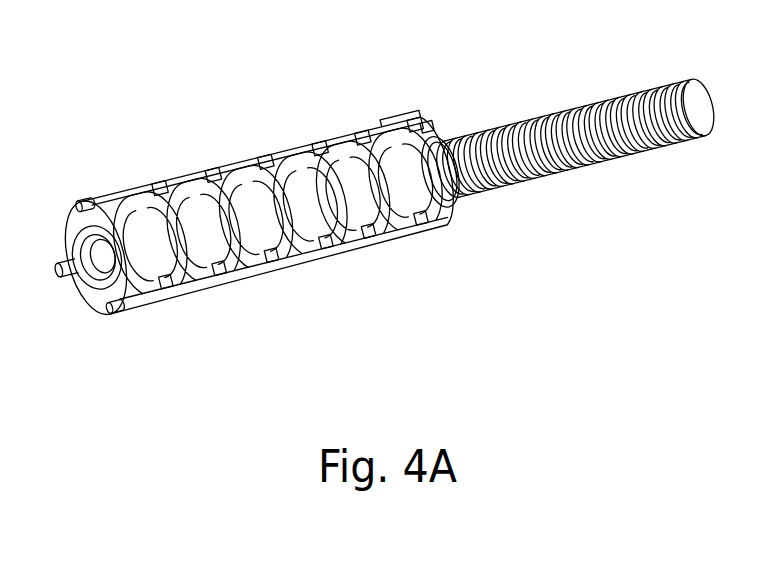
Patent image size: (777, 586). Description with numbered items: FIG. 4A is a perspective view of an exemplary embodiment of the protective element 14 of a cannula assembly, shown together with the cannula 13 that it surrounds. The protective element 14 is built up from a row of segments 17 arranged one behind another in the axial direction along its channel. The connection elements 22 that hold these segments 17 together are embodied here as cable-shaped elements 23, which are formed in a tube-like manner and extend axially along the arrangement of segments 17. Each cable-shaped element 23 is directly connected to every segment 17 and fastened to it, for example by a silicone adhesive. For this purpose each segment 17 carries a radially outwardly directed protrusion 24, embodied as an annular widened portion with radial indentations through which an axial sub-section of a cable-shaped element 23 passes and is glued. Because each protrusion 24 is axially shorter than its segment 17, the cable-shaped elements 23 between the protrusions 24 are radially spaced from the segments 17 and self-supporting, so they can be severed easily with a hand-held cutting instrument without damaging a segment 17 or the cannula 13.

The cannula 13 is at (652, 90).
The protective element 14 is at (236, 106).
The segments 17 is at (150, 192).
The connection elements 22 is at (320, 153).
The cable-shaped elements 23 is at (397, 112).
The protrusion 24 is at (443, 137).